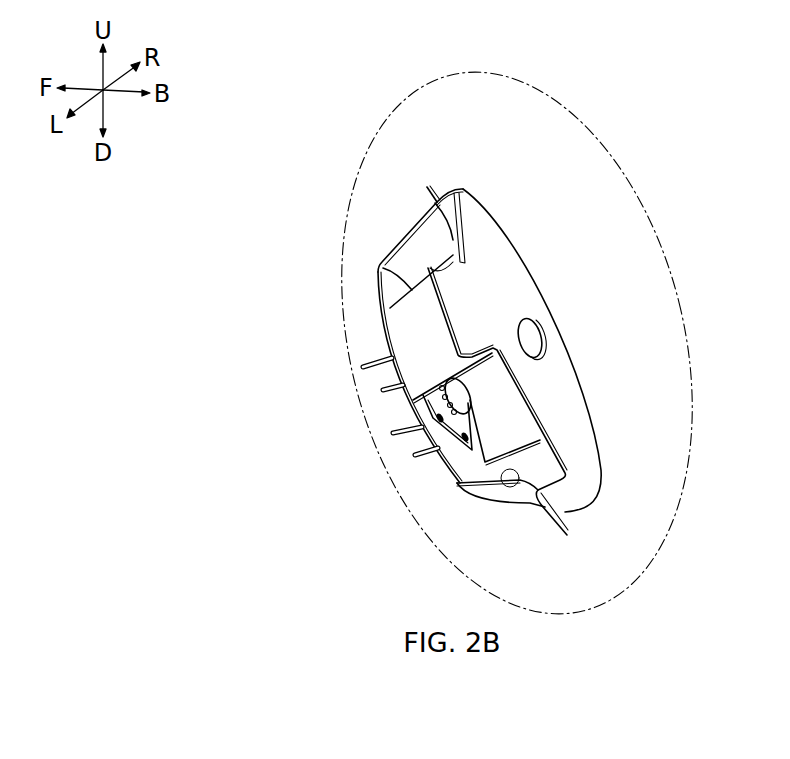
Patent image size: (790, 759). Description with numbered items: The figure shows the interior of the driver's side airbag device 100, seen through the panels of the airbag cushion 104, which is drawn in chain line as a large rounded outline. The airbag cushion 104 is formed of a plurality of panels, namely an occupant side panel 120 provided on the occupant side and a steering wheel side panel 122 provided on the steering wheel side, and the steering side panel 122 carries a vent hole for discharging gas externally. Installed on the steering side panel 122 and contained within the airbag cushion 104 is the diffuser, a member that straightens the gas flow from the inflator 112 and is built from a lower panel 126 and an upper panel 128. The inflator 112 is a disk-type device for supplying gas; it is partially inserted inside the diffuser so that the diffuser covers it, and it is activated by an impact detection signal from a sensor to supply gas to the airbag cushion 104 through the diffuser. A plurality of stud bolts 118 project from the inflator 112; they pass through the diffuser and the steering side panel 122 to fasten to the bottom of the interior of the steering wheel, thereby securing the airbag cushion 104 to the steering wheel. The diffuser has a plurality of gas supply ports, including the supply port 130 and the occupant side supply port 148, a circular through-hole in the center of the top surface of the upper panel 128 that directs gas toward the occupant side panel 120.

The driver's side airbag device 100 is at (368, 98).
The airbag cushion 104 is at (480, 80).
The inflator 112 is at (467, 382).
The stud bolts 118 is at (400, 435).
The occupant side panel 120 is at (540, 143).
The steering wheel side panel 122 is at (343, 325).
The lower panel 126 is at (378, 288).
The upper panel 128 is at (483, 213).
The supply port 130 is at (518, 484).
The occupant side supply port 148 is at (535, 328).